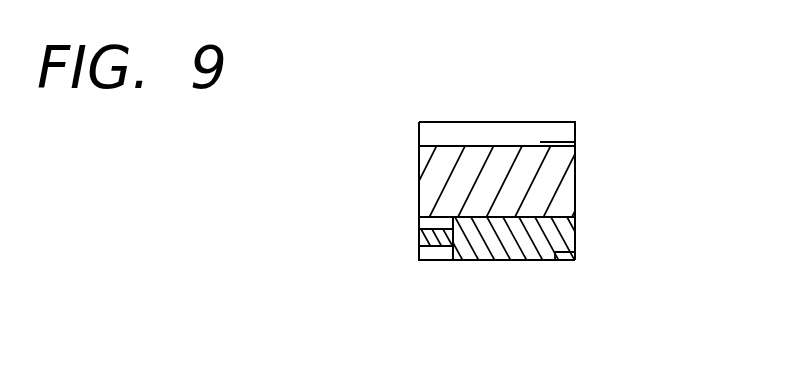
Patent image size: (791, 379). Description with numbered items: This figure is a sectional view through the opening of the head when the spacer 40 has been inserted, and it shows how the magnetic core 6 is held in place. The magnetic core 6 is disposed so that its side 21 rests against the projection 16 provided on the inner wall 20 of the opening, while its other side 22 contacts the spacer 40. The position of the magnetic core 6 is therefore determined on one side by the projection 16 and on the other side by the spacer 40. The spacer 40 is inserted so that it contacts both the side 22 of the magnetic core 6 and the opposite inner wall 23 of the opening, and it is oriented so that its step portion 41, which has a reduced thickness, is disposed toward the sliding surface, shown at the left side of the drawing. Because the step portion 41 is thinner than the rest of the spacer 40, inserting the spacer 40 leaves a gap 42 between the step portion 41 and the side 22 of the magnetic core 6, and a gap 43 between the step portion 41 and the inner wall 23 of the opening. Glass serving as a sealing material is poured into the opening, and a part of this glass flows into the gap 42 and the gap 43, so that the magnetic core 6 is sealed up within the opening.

The projection 16 is at (435, 132).
The inner wall 20 is at (556, 126).
The side 21 is at (575, 143).
The magnetic core 6 is at (452, 180).
The gap 42 is at (430, 221).
The step portion 41 is at (426, 238).
The gap 43 is at (427, 253).
The spacer 40 is at (513, 242).
The side 22 is at (575, 232).
The inner wall 23 is at (578, 252).